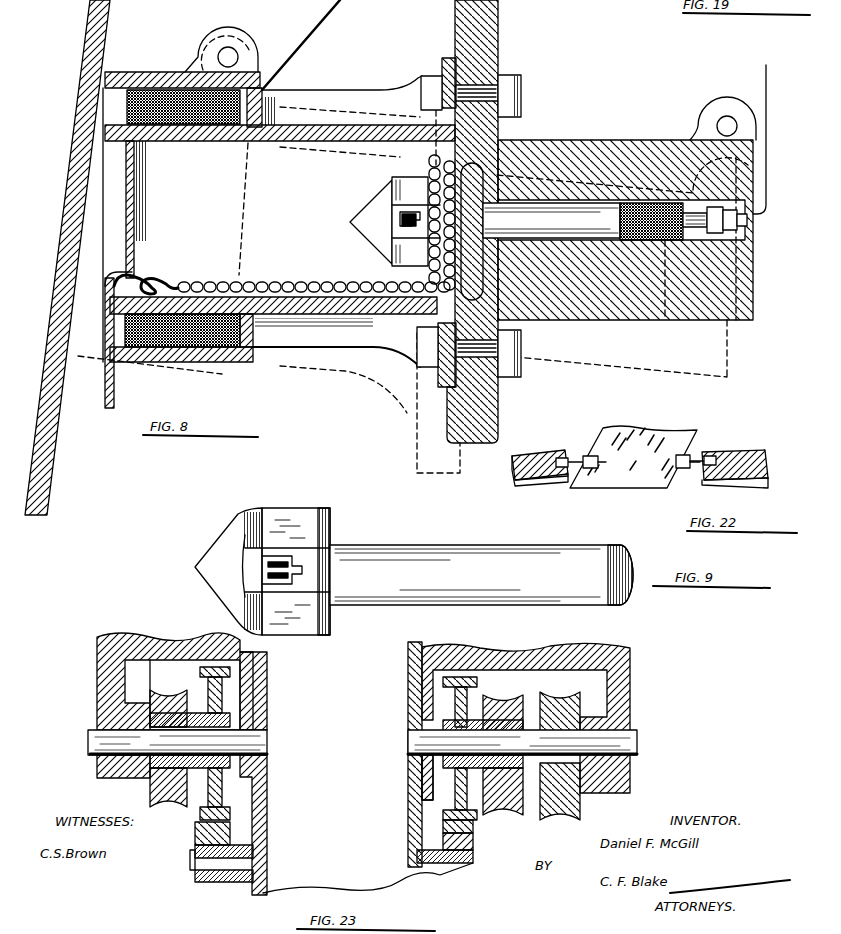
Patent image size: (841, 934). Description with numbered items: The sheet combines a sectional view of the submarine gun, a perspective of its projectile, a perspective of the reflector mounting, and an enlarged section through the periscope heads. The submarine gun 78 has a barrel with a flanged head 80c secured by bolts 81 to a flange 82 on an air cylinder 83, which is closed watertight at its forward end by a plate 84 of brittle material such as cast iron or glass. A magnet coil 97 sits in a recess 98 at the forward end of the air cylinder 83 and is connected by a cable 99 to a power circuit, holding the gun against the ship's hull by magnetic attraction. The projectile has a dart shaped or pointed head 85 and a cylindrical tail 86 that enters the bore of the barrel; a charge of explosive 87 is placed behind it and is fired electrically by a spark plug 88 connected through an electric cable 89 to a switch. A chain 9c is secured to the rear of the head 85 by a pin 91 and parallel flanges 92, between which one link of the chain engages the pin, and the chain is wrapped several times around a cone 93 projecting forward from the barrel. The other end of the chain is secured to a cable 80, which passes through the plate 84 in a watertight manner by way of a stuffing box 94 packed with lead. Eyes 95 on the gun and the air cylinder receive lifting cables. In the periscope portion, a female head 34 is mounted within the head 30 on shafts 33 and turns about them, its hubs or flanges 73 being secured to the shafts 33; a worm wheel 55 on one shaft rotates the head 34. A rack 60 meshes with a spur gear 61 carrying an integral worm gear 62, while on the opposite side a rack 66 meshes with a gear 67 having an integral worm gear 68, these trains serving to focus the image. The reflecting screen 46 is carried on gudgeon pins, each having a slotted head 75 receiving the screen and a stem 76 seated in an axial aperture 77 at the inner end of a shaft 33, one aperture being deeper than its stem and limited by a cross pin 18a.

In FIG. 8, the submarine gun 78 is at (582, 143).
In FIG. 8, the cable 80 is at (110, 408).
In FIG. 8, the flanged head 80c is at (506, 27).
In FIG. 8, the bolts 81 is at (522, 95).
In FIG. 8, the flange 82 is at (443, 67).
In FIG. 8, the air cylinder 83 is at (320, 132).
In FIG. 8, the plate 84 is at (134, 206).
In FIG. 8, the pointed head 85 is at (380, 203).
In FIG. 9, the pointed head 85 is at (233, 540).
In FIG. 8, the cylindrical tail 86 is at (603, 220).
In FIG. 9, the cylindrical tail 86 is at (570, 568).
In FIG. 8, the charge of explosive 87 is at (665, 320).
In FIG. 8, the spark plug 88 is at (740, 235).
In FIG. 8, the electric cable 89 is at (768, 87).
In FIG. 8, the pin 91 is at (387, 242).
In FIG. 9, the pin 91 is at (257, 510).
In FIG. 8, the parallel flanges 92 is at (396, 213).
In FIG. 9, the parallel flanges 92 is at (268, 557).
In FIG. 8, the cone 93 is at (230, 40).
In FIG. 8, the stuffing box 94 is at (150, 268).
In FIG. 8, the eyes 95 is at (715, 113).
In FIG. 8, the magnet coil 97 is at (158, 90).
In FIG. 8, the recess 98 is at (113, 110).
In FIG. 8, the cable 99 is at (296, 55).
In FIG. 8, the chain 9c is at (268, 283).
In FIG. 22, the shafts 33 is at (525, 450).
In FIG. 23, the shafts 33 is at (88, 745).
In FIG. 22, the reflecting screen 46 is at (633, 457).
In FIG. 22, the slotted head 75 is at (590, 455).
In FIG. 22, the stem 76 is at (565, 450).
In FIG. 22, the axial aperture 77 is at (533, 481).
In FIG. 22, the connection 18a is at (693, 465).
In FIG. 23, the head 30 is at (453, 650).
In FIG. 23, the female head 34 is at (417, 660).
In FIG. 23, the worm wheel 55 is at (567, 805).
In FIG. 23, the rack 60 is at (197, 843).
In FIG. 23, the spur gear 61 is at (207, 670).
In FIG. 23, the worm gear 62 is at (165, 687).
In FIG. 23, the rack 66 is at (473, 848).
In FIG. 23, the gear 67 is at (510, 652).
In FIG. 23, the worm gear 68 is at (503, 697).
In FIG. 23, the hubs or flanges 73 is at (250, 720).